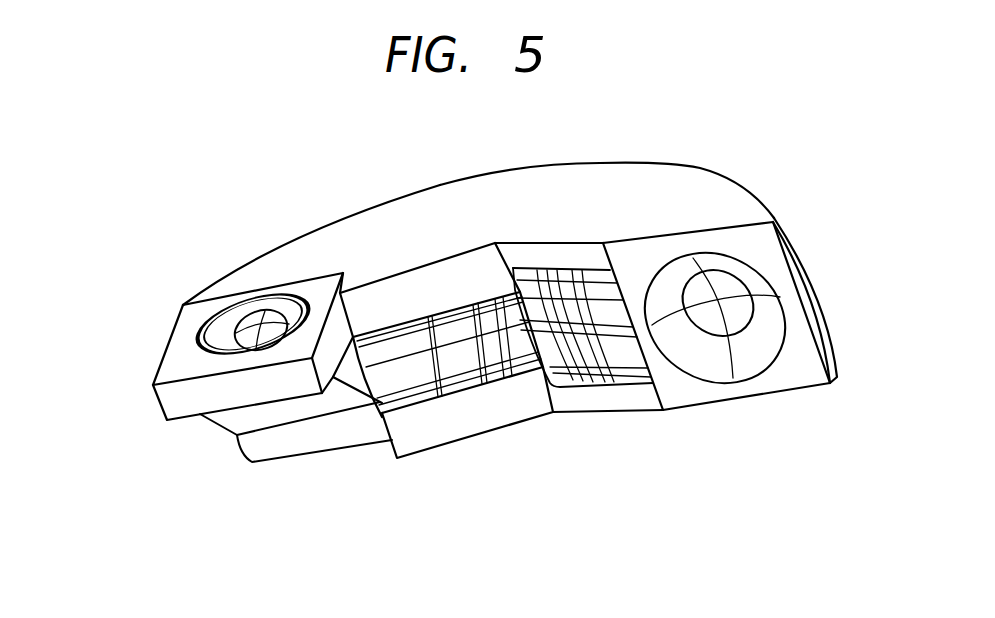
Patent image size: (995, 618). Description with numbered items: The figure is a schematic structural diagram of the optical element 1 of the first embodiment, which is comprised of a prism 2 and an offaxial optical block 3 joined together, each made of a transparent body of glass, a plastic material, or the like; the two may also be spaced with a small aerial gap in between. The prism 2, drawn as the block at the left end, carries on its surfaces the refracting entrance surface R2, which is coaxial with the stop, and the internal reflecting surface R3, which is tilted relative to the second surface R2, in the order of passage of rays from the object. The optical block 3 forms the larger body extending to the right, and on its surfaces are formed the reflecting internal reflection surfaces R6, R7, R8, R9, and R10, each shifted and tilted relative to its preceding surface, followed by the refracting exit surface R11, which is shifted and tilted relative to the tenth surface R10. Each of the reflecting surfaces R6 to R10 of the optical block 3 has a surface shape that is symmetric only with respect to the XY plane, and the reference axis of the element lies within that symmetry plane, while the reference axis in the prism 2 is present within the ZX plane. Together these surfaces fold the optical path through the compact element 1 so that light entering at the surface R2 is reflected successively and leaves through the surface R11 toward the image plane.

The optical element 1 is at (143, 553).
The prism 2 is at (195, 403).
The optical block 3 is at (388, 227).
The second surface R2 is at (243, 330).
The third surface R3 is at (280, 417).
The sixth surface R6 is at (263, 257).
The seventh surface R7 is at (415, 373).
The eighth surface R8 is at (493, 172).
The ninth surface R9 is at (610, 348).
The tenth surface R10 is at (675, 163).
The eleventh surface R11 is at (722, 347).